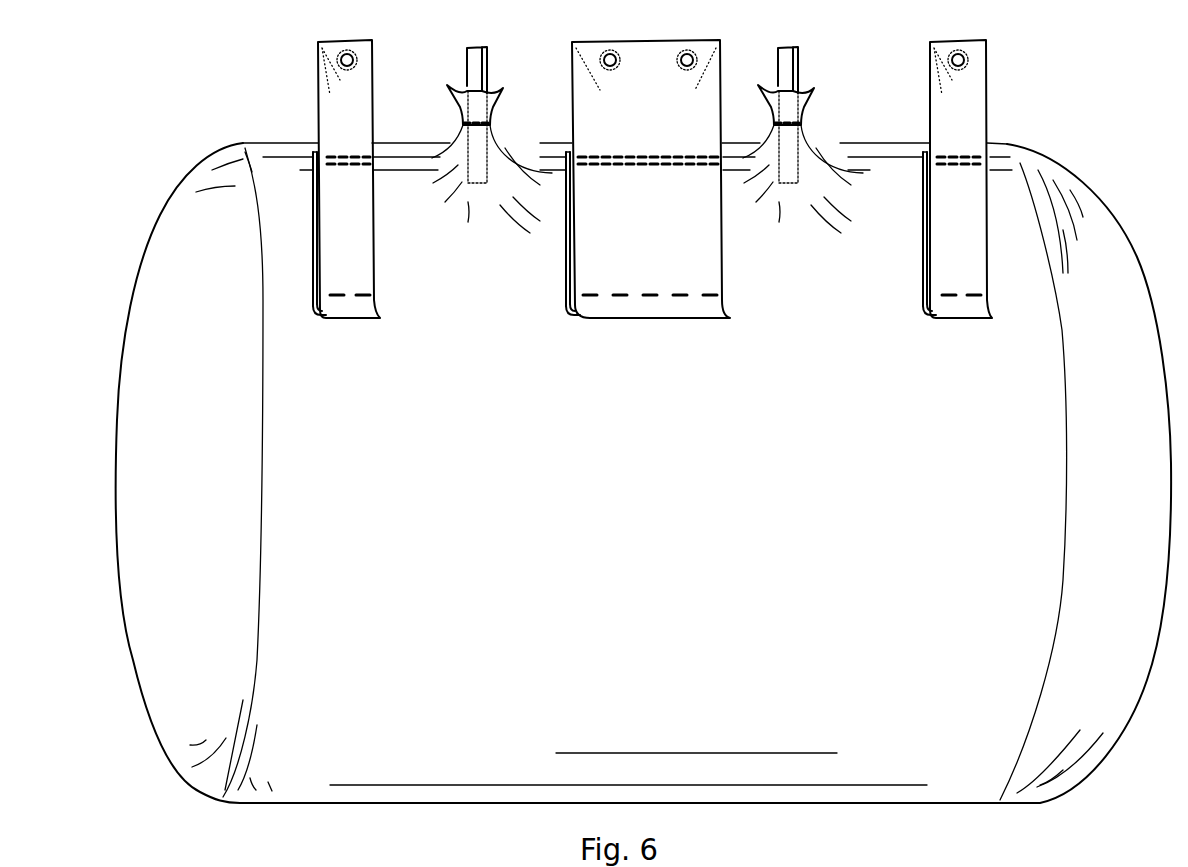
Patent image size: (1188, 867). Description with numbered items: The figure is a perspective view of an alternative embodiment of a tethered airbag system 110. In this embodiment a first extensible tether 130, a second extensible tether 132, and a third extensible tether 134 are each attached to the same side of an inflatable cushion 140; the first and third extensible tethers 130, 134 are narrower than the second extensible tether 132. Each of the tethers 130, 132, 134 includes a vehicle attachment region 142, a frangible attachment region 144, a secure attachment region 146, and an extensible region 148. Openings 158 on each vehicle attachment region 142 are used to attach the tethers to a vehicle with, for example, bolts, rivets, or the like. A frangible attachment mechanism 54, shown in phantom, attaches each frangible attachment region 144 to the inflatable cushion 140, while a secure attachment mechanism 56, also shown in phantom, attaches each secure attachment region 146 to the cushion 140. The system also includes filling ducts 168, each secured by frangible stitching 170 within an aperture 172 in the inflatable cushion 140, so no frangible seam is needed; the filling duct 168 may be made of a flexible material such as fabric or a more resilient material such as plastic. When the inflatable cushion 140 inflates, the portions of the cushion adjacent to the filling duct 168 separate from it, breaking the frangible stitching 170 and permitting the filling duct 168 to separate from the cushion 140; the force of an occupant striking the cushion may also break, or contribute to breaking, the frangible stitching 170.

The tethered airbag system 110 is at (210, 96).
The inflatable cushion 140 is at (671, 485).
The first extensible tether 130 is at (373, 63).
The second extensible tether 132 is at (652, 52).
The third extensible tether 134 is at (958, 42).
The vehicle attachment region 142 is at (320, 50).
The openings 158 is at (346, 52).
The secure attachment mechanism 56 is at (354, 156).
The frangible attachment mechanism 54 is at (353, 300).
The secure attachment region 146 is at (313, 157).
The extensible region 148 is at (316, 205).
The frangible attachment region 144 is at (320, 313).
The filling duct 168 is at (488, 63).
The aperture 172 is at (470, 93).
The frangible stitching 170 is at (492, 126).